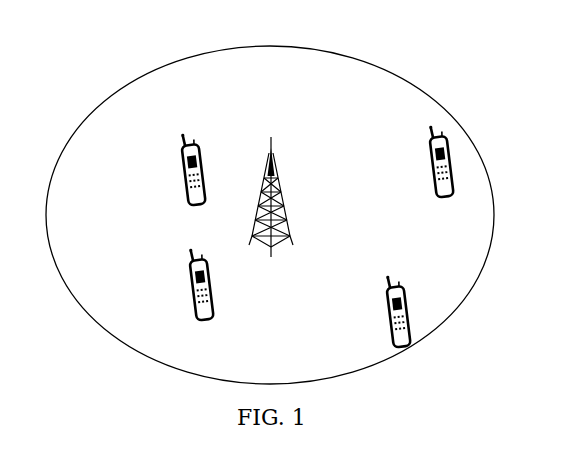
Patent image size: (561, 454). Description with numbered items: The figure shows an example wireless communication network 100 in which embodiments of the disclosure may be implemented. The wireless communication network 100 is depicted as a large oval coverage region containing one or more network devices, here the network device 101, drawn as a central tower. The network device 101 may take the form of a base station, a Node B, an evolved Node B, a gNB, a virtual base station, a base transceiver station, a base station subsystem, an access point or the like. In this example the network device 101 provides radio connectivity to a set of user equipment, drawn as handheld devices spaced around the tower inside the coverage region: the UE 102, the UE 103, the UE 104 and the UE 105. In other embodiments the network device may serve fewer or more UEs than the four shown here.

The wireless communication network 100 is at (136, 68).
The network device 101 is at (323, 153).
The UE 102 is at (435, 200).
The UE 103 is at (215, 297).
The UE 104 is at (197, 142).
The UE 105 is at (379, 296).